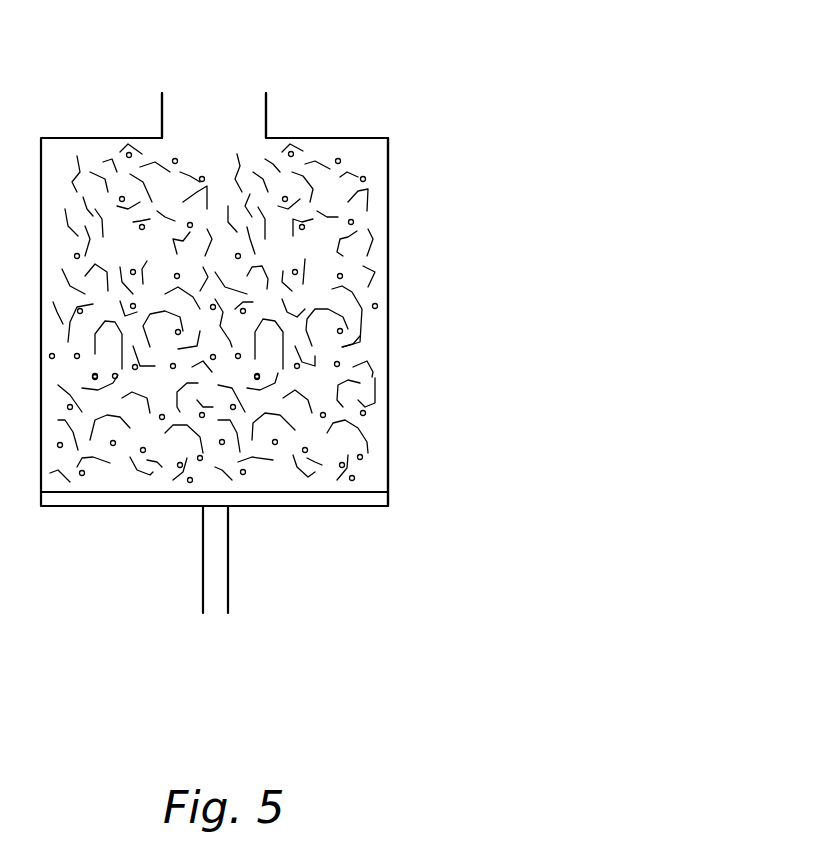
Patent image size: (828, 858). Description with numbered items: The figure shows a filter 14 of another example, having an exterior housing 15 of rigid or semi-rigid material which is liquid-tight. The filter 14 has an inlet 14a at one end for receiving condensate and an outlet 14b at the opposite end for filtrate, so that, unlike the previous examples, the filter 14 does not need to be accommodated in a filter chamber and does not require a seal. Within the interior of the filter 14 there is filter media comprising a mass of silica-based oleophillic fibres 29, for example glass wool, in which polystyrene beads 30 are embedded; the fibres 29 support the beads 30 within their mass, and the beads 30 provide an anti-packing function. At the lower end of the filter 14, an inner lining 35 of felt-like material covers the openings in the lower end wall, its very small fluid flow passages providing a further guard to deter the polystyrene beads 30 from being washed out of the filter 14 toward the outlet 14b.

The filter 14 is at (393, 215).
The inlet 14a is at (224, 118).
The outlet 14b is at (217, 597).
The exterior housing 15 is at (390, 398).
The silica-based oleophillic fibres 29 is at (348, 170).
The polystyrene beads 30 is at (293, 303).
The inner lining 35 is at (318, 497).